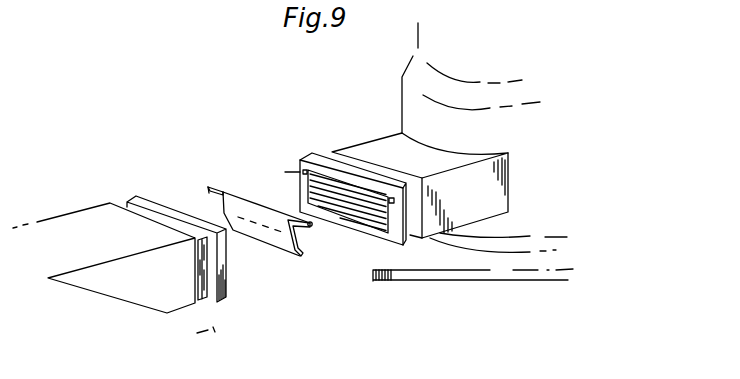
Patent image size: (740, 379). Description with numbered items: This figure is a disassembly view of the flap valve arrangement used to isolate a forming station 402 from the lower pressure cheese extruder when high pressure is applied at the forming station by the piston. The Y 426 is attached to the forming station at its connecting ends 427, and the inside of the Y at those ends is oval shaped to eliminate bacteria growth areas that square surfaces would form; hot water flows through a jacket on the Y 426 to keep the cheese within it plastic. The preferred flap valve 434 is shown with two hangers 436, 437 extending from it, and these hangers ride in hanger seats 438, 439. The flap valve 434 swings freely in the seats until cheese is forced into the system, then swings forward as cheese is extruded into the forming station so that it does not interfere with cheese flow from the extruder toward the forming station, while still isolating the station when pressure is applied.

The forming station 402 is at (423, 77).
The Y 426 is at (65, 233).
The connecting ends 427 is at (158, 203).
The flap valve 434 is at (251, 205).
The hanger 436 is at (215, 187).
The hanger 437 is at (306, 227).
The hanger seat 438 is at (336, 205).
The hanger seat 439 is at (392, 201).